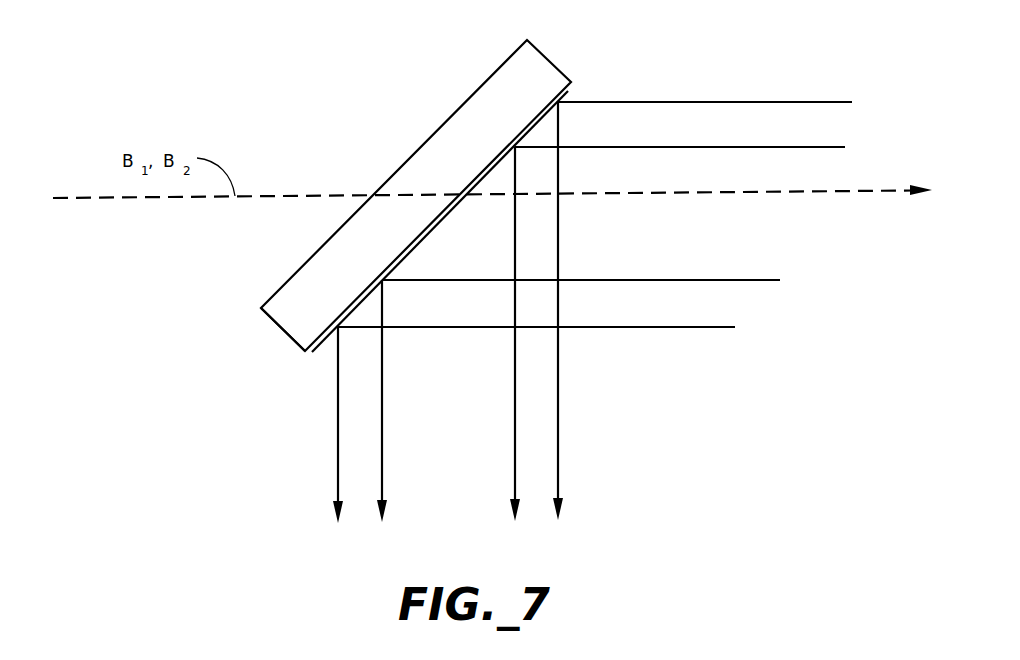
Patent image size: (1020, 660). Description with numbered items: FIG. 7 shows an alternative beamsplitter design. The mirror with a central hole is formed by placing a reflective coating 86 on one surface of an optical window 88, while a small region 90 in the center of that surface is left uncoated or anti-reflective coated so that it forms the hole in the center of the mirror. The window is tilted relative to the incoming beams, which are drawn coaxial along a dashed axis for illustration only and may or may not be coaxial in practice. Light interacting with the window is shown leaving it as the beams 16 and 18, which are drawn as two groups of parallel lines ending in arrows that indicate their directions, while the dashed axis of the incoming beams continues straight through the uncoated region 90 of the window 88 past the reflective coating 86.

The first beam portion 16 is at (738, 115).
The second beam portion 18 is at (686, 312).
The reflective coating 86 is at (570, 94).
The optical window 88 is at (282, 329).
The small region 90 is at (464, 201).